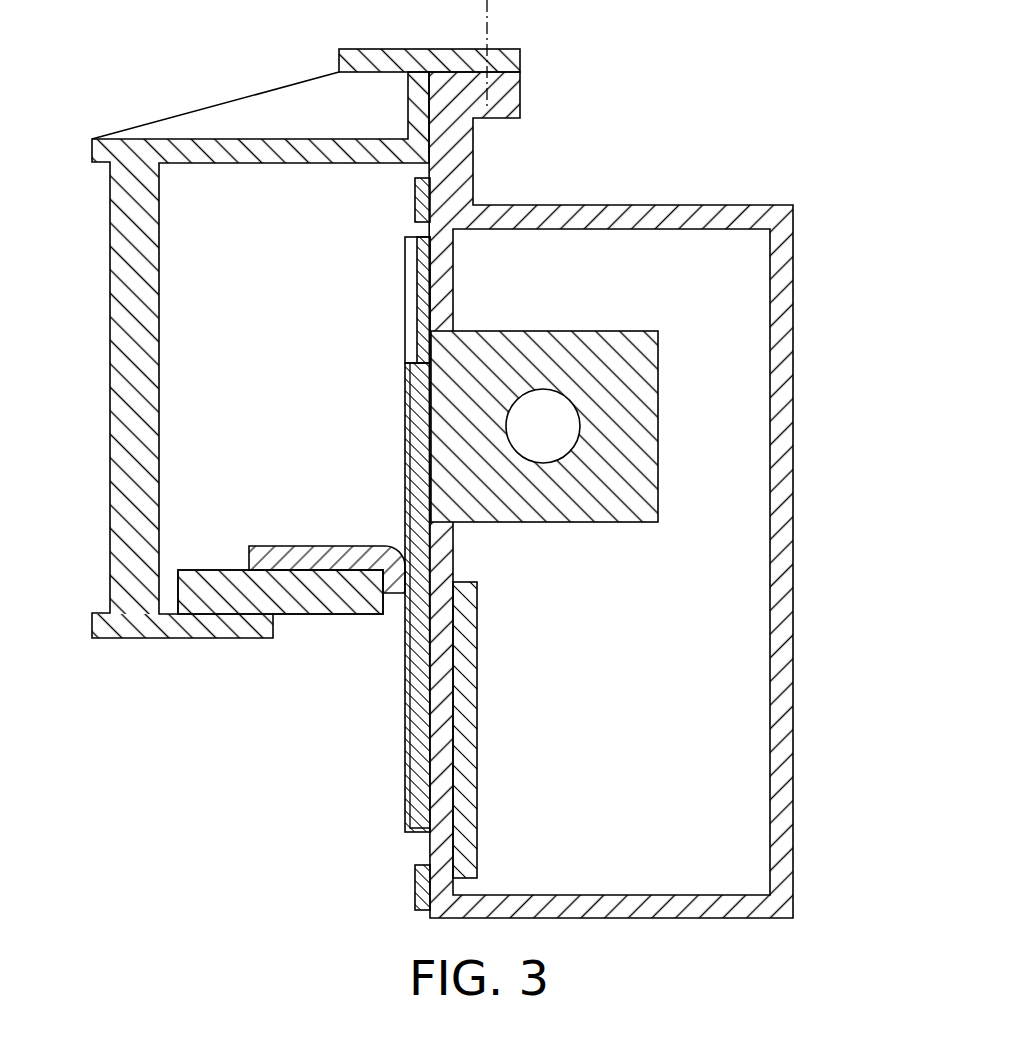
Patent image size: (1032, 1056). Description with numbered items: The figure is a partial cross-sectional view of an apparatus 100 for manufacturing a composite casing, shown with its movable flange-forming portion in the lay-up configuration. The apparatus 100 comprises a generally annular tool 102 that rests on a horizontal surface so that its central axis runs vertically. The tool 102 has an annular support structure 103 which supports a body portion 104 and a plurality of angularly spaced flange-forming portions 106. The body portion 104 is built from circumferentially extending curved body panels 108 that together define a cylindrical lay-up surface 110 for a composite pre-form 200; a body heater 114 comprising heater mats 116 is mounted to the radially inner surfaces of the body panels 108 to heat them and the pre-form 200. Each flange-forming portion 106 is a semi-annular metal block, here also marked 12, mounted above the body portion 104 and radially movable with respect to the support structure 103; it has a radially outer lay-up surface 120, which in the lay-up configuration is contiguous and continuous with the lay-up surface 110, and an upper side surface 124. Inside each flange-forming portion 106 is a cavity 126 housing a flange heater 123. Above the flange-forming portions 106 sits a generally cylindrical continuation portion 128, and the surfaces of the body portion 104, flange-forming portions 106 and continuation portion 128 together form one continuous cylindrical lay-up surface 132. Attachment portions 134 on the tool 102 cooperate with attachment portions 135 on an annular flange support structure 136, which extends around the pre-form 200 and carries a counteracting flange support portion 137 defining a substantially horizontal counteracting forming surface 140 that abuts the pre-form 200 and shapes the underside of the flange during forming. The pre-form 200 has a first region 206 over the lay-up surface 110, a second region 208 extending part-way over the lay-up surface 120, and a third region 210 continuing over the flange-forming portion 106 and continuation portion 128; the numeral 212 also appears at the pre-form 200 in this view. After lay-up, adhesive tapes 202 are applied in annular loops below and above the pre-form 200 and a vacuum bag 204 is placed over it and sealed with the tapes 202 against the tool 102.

The apparatus 100 is at (740, 33).
The tool 102 is at (600, 495).
The support structure 103 is at (600, 495).
The body portion 104 is at (566, 495).
The flange-forming portion 106 is at (533, 417).
The curved body panel 108 is at (566, 495).
The lay-up surface 110 is at (566, 495).
The block body 12 is at (533, 427).
The body heater 114 is at (525, 730).
The heater mat 116 is at (465, 733).
The radially outer lay-up surface 120 is at (533, 454).
The flange heater 123 is at (543, 447).
The upper side surface 124 is at (533, 454).
The cavity 126 is at (617, 483).
The continuation portion 128 is at (611, 495).
The continuous lay-up surface 132 is at (533, 454).
The attachment portion 134 is at (520, 93).
The attachment portion 135 is at (462, 55).
The flange support structure 136 is at (260, 320).
The counteracting flange support portion 137 is at (300, 546).
The counteracting forming surface 140 is at (256, 540).
The composite pre-form 200 is at (371, 597).
The adhesive tape 202 is at (418, 196).
The vacuum bag 204 is at (357, 300).
The first region 206 is at (376, 597).
The second region 208 is at (376, 597).
The third region 210 is at (418, 268).
The sealing surface 212 is at (408, 465).